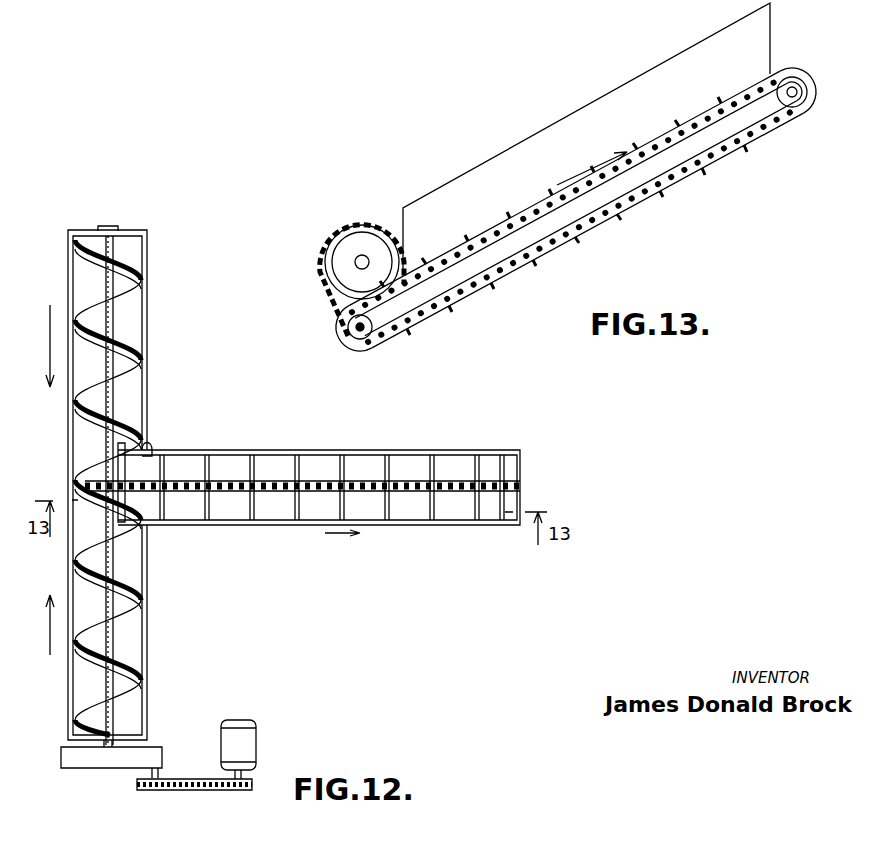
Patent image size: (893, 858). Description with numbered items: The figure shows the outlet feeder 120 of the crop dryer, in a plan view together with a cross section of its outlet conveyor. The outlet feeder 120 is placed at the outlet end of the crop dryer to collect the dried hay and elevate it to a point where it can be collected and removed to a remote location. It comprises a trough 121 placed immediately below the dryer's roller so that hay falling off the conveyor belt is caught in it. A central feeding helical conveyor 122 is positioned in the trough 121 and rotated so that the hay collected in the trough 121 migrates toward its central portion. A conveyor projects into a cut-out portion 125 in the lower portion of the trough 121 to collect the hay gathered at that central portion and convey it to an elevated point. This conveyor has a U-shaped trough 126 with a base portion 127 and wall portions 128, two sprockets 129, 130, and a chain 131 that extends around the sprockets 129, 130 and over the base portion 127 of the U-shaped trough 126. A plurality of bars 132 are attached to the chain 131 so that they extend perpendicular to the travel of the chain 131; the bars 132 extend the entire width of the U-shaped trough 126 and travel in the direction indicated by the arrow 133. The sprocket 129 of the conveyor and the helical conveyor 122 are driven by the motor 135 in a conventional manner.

In FIG. 12, the outlet feeder 120 is at (60, 446).
In FIG. 12, the trough 121 is at (142, 310).
In FIG. 12, the central feeding helical conveyor 122 is at (128, 368).
In FIG. 13, the central feeding helical conveyor 122 is at (373, 245).
In FIG. 12, the cut-out portion 125 is at (152, 446).
In FIG. 13, the U-shaped trough 126 is at (665, 79).
In FIG. 12, the base portion 127 is at (493, 518).
In FIG. 13, the base portion 127 is at (576, 208).
In FIG. 12, the wall portions 128 is at (270, 450).
In FIG. 13, the wall portions 128 is at (623, 103).
In FIG. 13, the sprocket 129 is at (352, 333).
In FIG. 13, the sprocket 130 is at (795, 106).
In FIG. 12, the chain 131 is at (492, 460).
In FIG. 13, the chain 131 is at (716, 150).
In FIG. 12, the bars 132 is at (445, 431).
In FIG. 13, the bars 132 is at (480, 262).
In FIG. 13, the arrow 133 is at (597, 141).
In FIG. 12, the motor 135 is at (240, 738).